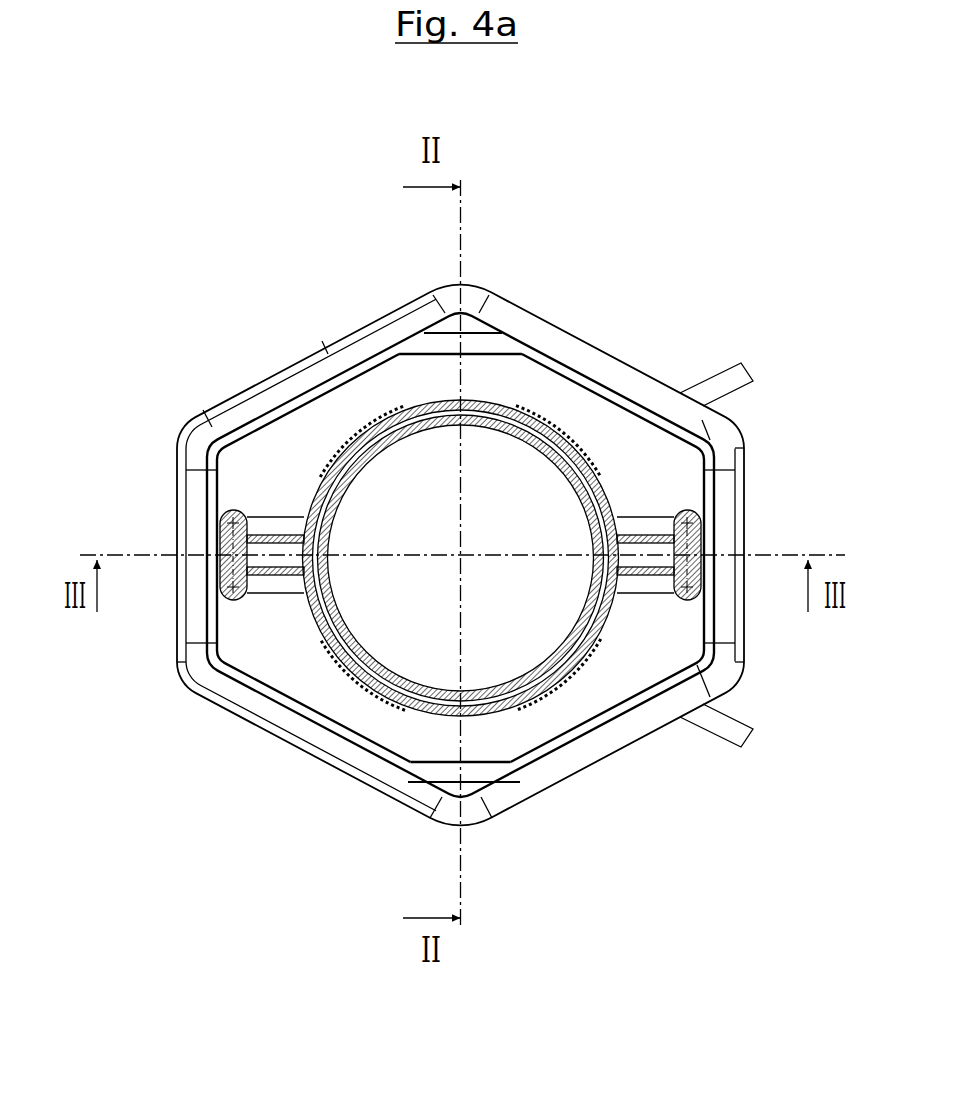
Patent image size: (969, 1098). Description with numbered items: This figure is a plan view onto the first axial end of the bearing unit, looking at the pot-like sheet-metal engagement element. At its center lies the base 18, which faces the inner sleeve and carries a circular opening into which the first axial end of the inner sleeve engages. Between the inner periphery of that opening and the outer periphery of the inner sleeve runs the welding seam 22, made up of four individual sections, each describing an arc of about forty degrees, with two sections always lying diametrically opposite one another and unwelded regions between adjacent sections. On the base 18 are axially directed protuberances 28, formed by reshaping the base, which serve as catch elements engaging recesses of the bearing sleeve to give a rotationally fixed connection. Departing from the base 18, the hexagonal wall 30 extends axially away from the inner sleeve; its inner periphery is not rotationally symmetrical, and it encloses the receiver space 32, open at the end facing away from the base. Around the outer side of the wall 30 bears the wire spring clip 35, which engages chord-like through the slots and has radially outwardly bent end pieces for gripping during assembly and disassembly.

The base 18 is at (252, 652).
The welding seam 22 is at (357, 437).
The protuberances 28 is at (655, 548).
The hexagonal wall 30 is at (512, 800).
The receiver space 32 is at (297, 452).
The spring clip 35 is at (240, 388).